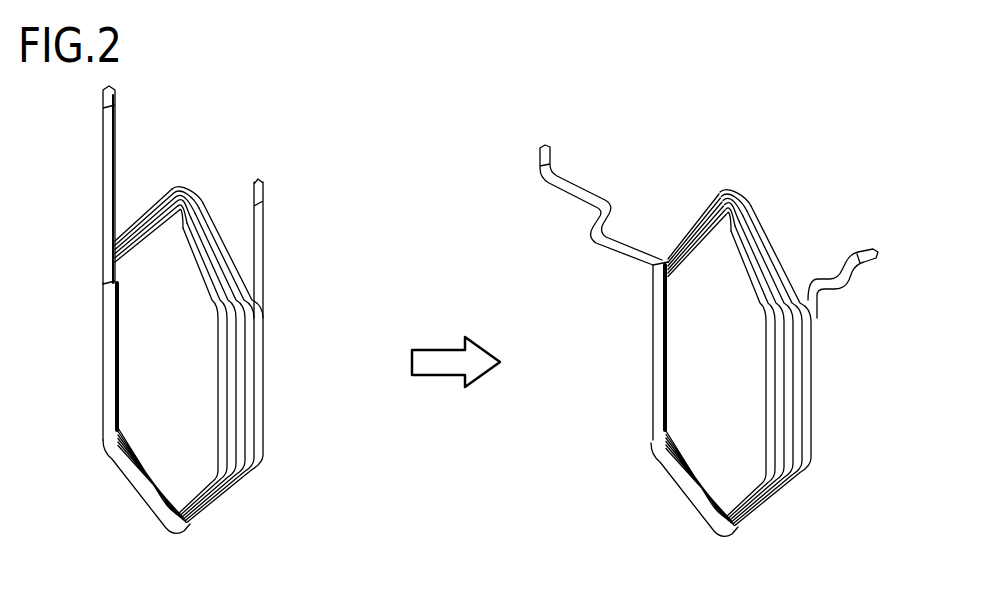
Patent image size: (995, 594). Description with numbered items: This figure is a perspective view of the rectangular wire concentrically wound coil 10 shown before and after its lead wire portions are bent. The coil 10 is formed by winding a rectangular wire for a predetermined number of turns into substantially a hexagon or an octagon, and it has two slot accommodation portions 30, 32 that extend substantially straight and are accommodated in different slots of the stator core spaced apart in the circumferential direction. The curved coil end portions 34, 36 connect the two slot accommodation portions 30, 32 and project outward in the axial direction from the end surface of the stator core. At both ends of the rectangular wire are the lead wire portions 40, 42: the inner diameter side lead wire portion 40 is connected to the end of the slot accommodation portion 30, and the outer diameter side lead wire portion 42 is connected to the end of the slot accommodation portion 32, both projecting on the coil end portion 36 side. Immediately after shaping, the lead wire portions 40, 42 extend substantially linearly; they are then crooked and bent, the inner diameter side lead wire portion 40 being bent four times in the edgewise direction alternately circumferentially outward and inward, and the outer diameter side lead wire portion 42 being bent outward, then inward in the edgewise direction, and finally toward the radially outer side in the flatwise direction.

The rectangular wire concentrically wound coil 10 is at (294, 197).
The slot accommodation portion 30 is at (103, 342).
The slot accommodation portion 32 is at (266, 372).
The coil end portion 34 is at (185, 530).
The coil end portion 36 is at (185, 188).
The inner diameter side lead wire portion 40 is at (103, 161).
The outer diameter side lead wire portion 42 is at (266, 247).